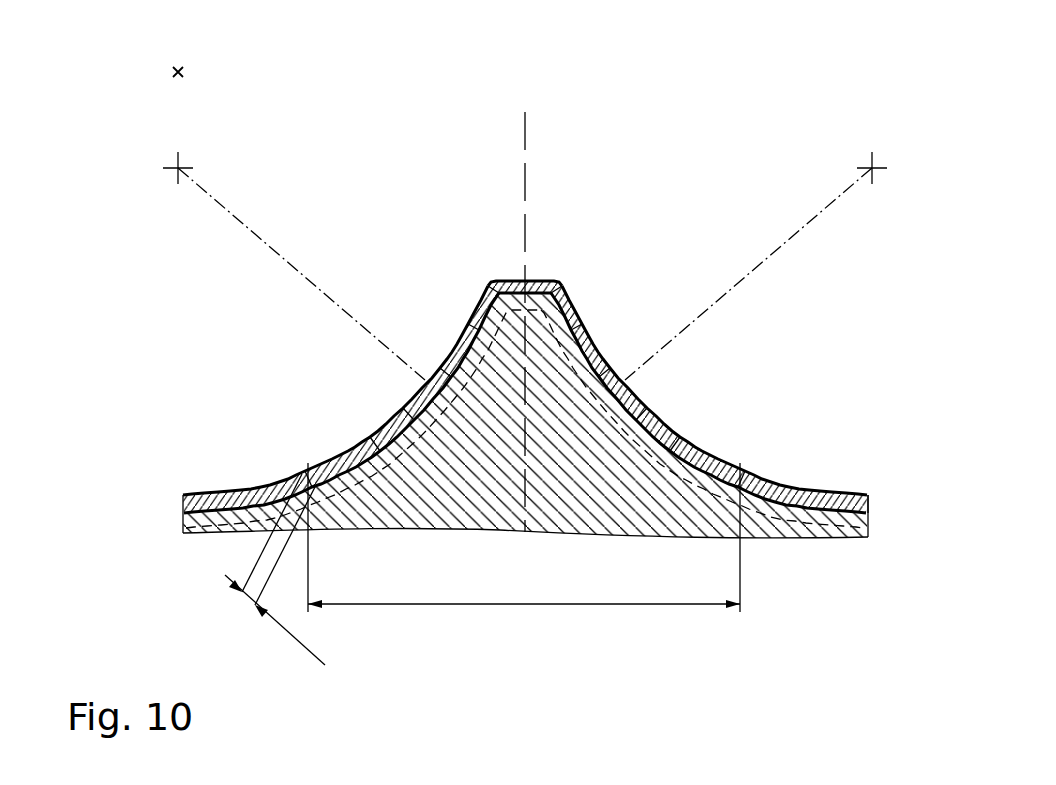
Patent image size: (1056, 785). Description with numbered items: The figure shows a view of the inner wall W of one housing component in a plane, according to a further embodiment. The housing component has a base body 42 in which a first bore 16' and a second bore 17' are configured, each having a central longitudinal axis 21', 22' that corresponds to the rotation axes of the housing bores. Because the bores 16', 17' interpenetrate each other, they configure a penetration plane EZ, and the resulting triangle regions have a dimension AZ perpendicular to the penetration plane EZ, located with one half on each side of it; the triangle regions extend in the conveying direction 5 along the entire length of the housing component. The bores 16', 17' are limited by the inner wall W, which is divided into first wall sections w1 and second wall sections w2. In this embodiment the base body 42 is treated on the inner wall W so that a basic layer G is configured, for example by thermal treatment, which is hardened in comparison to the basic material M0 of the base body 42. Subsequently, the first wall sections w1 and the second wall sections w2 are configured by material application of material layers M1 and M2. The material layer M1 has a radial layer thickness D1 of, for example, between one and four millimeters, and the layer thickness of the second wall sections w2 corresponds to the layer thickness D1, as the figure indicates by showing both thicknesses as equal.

The conveying direction 5 is at (175, 72).
The first bore 16' is at (362, 407).
The second bore 17' is at (704, 407).
The central longitudinal axis of the first bore 21' is at (245, 266).
The central longitudinal axis of the second bore 22' is at (825, 266).
The base body 42 is at (780, 528).
The basic material M0 is at (525, 412).
The material layer M1 is at (870, 502).
The material layer M2 is at (448, 350).
The penetration plane EZ is at (525, 160).
The first wall sections w1 is at (563, 291).
The second wall sections w2 is at (585, 73).
The inner wall W is at (310, 456).
The basic layer G is at (183, 514).
The dimension of the triangle regions AZ is at (524, 537).
The layer thickness D1 is at (317, 569).